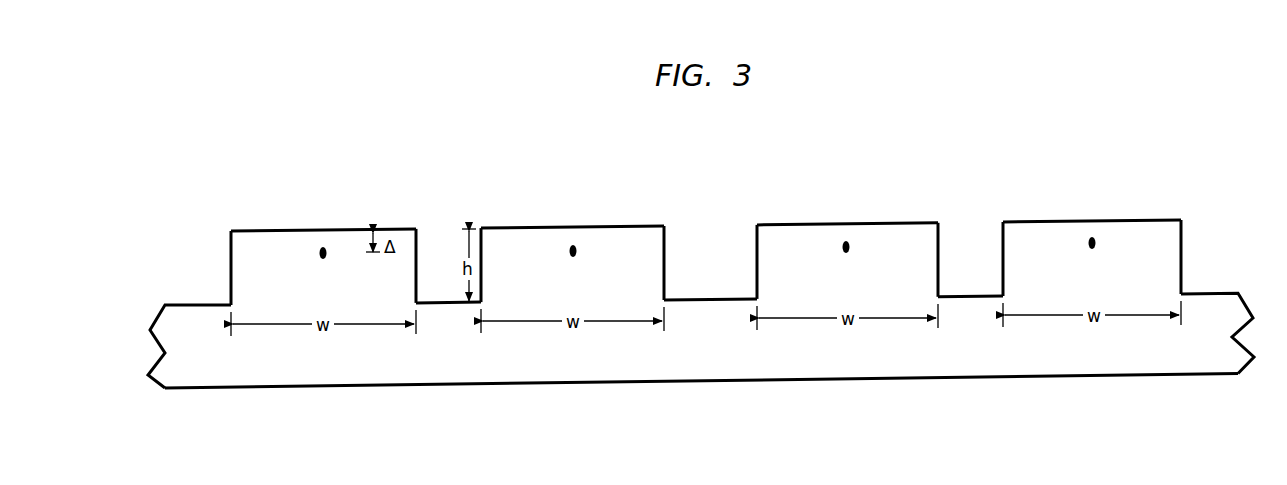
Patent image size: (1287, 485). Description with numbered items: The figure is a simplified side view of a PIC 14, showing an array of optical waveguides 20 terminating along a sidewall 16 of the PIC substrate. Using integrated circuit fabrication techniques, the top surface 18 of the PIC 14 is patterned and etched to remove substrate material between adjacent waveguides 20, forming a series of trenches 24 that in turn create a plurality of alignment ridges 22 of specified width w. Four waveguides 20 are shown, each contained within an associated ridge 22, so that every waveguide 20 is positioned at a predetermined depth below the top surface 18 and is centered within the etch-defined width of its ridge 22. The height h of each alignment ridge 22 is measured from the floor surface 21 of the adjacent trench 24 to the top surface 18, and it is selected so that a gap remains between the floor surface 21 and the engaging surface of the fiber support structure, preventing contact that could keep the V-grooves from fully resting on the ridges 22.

The PIC 14 is at (701, 265).
The sidewall 16 is at (438, 372).
The top surface 18 is at (520, 228).
The optical waveguides 20 is at (323, 247).
The floor surface 21 is at (722, 300).
The alignment ridges 22 is at (255, 248).
The trenches 24 is at (198, 258).